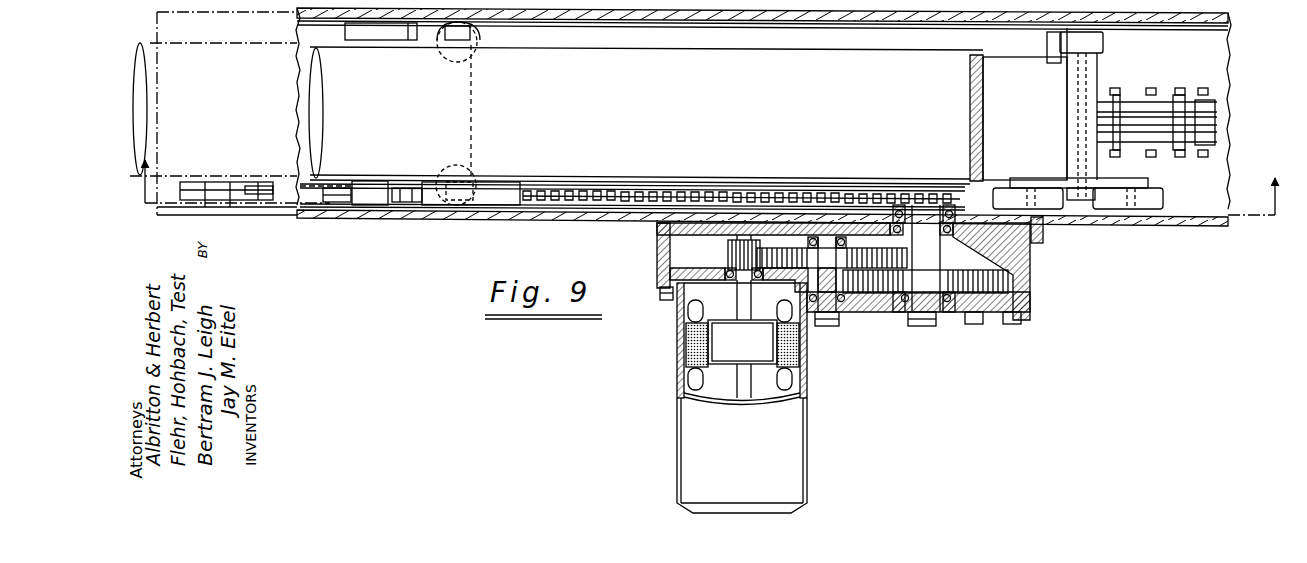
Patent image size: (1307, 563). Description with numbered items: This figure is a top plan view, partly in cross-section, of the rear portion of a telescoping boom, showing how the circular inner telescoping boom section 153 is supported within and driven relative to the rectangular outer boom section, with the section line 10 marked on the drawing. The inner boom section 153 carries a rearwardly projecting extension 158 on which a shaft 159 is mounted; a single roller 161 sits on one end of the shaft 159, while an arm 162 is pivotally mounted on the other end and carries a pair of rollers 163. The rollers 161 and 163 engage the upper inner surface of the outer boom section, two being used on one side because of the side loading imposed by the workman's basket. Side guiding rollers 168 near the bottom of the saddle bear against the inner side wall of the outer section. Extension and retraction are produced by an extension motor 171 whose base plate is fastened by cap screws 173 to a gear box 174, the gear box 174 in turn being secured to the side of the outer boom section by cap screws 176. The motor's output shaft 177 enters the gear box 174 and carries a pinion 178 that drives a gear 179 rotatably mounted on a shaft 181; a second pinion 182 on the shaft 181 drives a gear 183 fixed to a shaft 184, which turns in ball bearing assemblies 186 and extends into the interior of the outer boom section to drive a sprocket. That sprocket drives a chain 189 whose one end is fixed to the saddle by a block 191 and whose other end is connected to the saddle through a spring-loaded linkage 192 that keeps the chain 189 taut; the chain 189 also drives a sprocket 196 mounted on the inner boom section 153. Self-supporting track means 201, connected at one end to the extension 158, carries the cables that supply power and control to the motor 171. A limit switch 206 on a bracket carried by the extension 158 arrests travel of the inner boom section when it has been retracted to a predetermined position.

The section line indicator 10 is at (708, 171).
The inner telescoping boom section 153 is at (753, 120).
The extension 158 is at (1038, 151).
The shaft 159 is at (1075, 100).
The single roller 161 is at (1100, 42).
The arm 162 is at (1152, 183).
The rollers 163 is at (1100, 209).
The side guiding rollers 168 is at (441, 113).
The extension motor 171 is at (683, 437).
The cap screws 173 is at (660, 300).
The gear box 174 is at (657, 258).
The cap screws 176 is at (1040, 244).
The output shaft 177 is at (745, 318).
The pinion 178 is at (728, 258).
The gear 179 is at (907, 222).
The shaft 181 is at (836, 313).
The pinion 182 is at (832, 276).
The gear 183 is at (990, 268).
The shaft 184 is at (922, 312).
The ball bearing assemblies 186 is at (960, 210).
The chain 189 is at (690, 192).
The block 191 is at (362, 185).
The linkage 192 is at (498, 187).
The sprocket 196 is at (265, 205).
The self-supporting track means 201 is at (1183, 88).
The limit switch 206 is at (1048, 43).